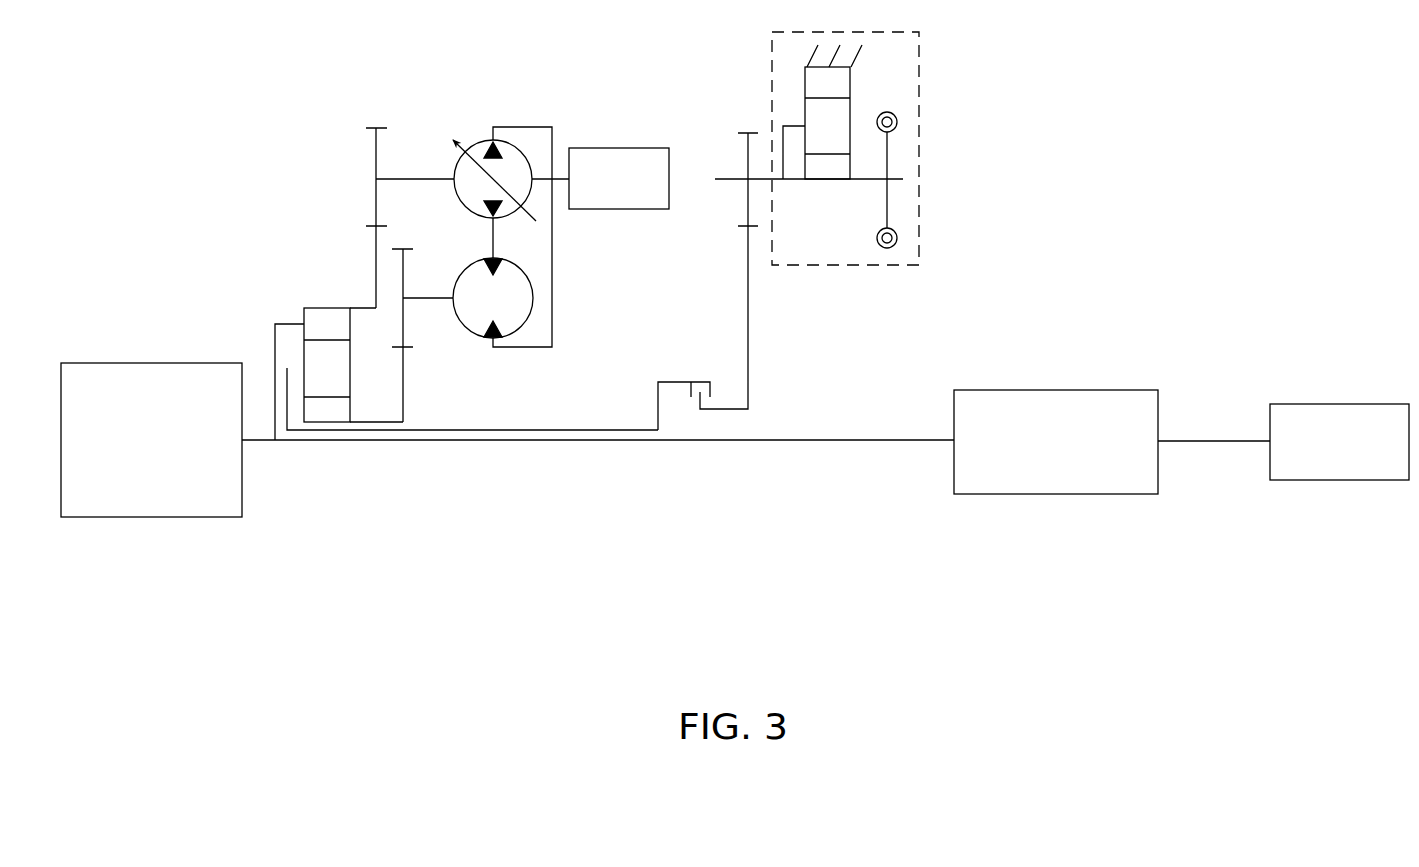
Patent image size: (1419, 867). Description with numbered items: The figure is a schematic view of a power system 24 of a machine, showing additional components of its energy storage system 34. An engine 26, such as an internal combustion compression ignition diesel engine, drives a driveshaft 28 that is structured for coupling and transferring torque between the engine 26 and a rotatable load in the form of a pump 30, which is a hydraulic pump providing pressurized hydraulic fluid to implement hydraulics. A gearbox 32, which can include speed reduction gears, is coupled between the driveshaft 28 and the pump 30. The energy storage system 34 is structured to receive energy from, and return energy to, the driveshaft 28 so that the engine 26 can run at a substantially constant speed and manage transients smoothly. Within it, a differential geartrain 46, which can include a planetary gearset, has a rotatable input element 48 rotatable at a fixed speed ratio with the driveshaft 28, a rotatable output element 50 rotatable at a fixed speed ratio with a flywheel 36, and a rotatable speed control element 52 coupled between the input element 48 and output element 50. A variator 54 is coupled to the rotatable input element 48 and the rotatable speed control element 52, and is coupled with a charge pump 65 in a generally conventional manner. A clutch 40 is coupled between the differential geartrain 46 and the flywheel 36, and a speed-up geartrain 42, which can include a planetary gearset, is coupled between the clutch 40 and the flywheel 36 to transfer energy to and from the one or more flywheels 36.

The power system 24 is at (122, 154).
The engine 26 is at (100, 363).
The driveshaft 28 is at (523, 455).
The pump 30 is at (1296, 404).
The gearbox 32 is at (986, 390).
The energy storage system 34 is at (418, 106).
The flywheel 36 is at (898, 238).
The clutch 40 is at (679, 372).
The speed-up geartrain 42 is at (860, 90).
The differential geartrain 46 is at (296, 282).
The rotatable input element 48 is at (276, 324).
The rotatable output element 50 is at (418, 430).
The rotatable speed control element 52 is at (363, 384).
The variator 54 is at (541, 364).
The charge pump 65 is at (620, 148).